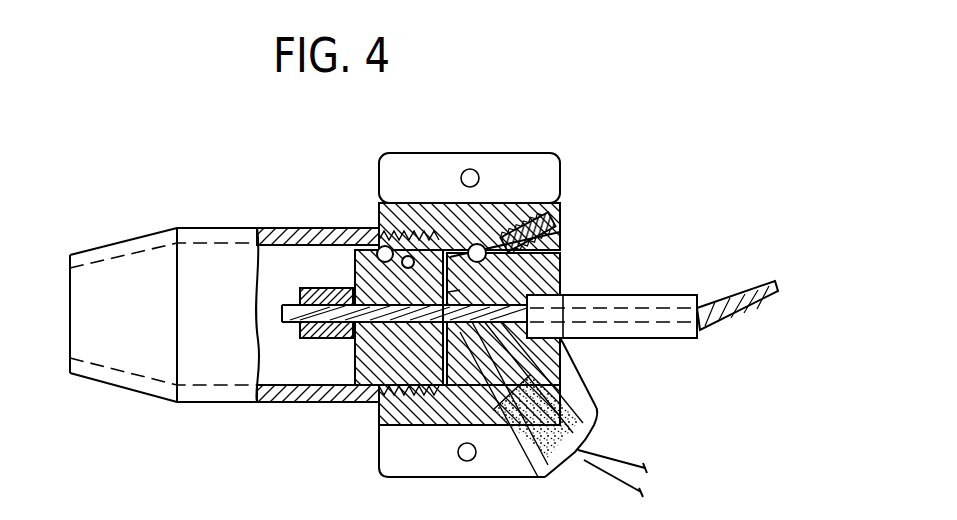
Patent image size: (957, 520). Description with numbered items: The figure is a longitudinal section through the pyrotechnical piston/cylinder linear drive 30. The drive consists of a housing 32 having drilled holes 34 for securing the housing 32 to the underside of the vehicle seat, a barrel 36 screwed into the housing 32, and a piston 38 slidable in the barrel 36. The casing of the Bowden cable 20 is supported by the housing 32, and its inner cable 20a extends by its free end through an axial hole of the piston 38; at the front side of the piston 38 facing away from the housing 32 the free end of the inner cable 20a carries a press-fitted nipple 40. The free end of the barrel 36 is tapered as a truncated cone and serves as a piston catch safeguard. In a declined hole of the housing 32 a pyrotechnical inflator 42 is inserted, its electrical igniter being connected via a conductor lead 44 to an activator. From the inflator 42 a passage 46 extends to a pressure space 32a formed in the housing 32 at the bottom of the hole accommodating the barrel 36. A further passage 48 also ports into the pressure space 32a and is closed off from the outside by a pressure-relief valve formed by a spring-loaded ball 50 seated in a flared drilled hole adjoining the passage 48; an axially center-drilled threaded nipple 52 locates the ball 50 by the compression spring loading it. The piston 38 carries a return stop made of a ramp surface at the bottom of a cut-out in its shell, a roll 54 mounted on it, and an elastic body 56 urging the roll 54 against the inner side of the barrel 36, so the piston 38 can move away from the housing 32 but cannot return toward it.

The Bowden cable 20 is at (648, 315).
The inner cable 20a is at (757, 305).
The piston/cylinder linear drive 30 is at (293, 412).
The housing 32 is at (505, 228).
The pressure space 32a is at (453, 298).
The drilled holes 34 is at (471, 169).
The barrel 36 is at (210, 372).
The piston 38 is at (375, 370).
The press-fitted nipple 40 is at (316, 288).
The pyrotechnical inflator 42 is at (576, 407).
The conductor lead 44 is at (611, 483).
The passage 46 is at (485, 365).
The further passage 48 is at (457, 270).
The spring-loaded ball 50 is at (479, 244).
The threaded nipple 52 is at (552, 236).
The roll 54 is at (378, 245).
The elastic body 56 is at (410, 243).